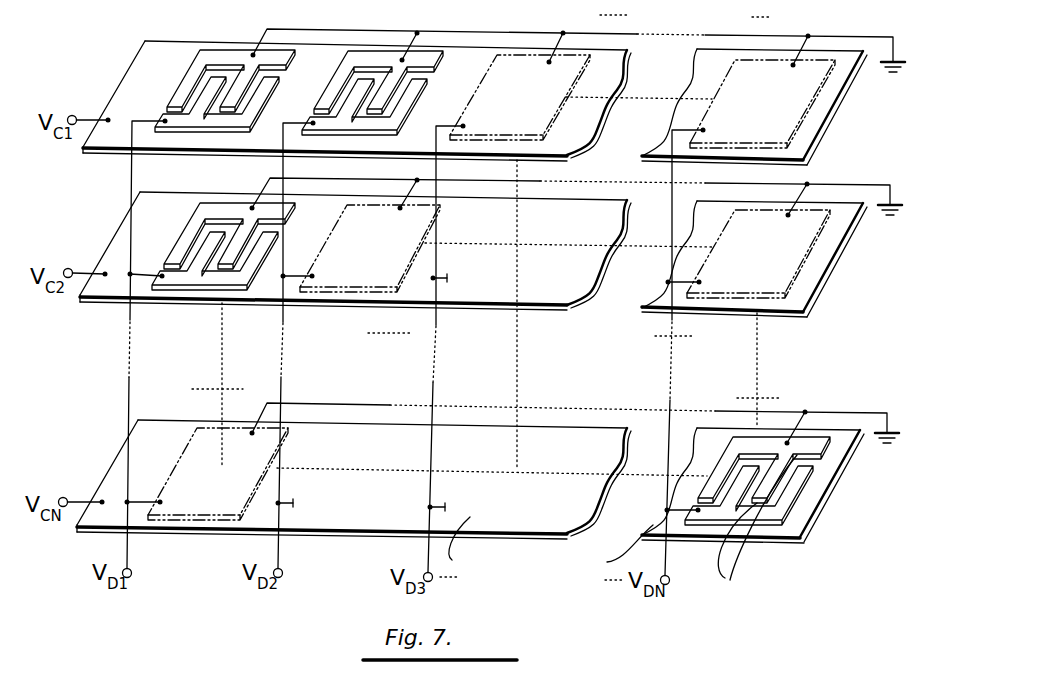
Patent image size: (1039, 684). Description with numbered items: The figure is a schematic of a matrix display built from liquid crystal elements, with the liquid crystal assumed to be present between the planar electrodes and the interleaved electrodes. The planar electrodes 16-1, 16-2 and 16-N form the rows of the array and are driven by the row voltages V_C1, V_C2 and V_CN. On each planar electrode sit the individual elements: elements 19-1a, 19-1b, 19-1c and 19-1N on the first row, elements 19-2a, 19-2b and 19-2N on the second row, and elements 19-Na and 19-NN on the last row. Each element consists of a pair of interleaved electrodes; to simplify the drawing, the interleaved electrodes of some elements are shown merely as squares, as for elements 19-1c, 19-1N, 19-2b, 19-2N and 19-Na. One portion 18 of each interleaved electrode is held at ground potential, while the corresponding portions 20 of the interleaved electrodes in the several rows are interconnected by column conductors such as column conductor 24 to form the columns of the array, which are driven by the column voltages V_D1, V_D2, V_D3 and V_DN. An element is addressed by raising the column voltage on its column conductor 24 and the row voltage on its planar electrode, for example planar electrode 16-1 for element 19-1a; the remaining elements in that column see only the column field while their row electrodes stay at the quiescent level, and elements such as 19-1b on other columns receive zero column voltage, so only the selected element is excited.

The planar electrode 16-1 is at (648, 133).
The planar electrode 16-2 is at (649, 275).
The planar electrode 16-N is at (657, 503).
The portion of interleaved electrode 18 is at (199, 64).
The portion of interleaved electrode 20 is at (165, 121).
The column conductor 24 is at (131, 170).
The matrix element 19-1a is at (207, 66).
The matrix element 19-1b is at (382, 43).
The matrix element 19-1c is at (534, 44).
The matrix element 19-1N is at (780, 50).
The matrix element 19-2a is at (180, 293).
The matrix element 19-2b is at (330, 295).
The matrix element 19-2N is at (700, 310).
The matrix element 19-Na is at (203, 425).
The matrix element 19-NN is at (769, 424).